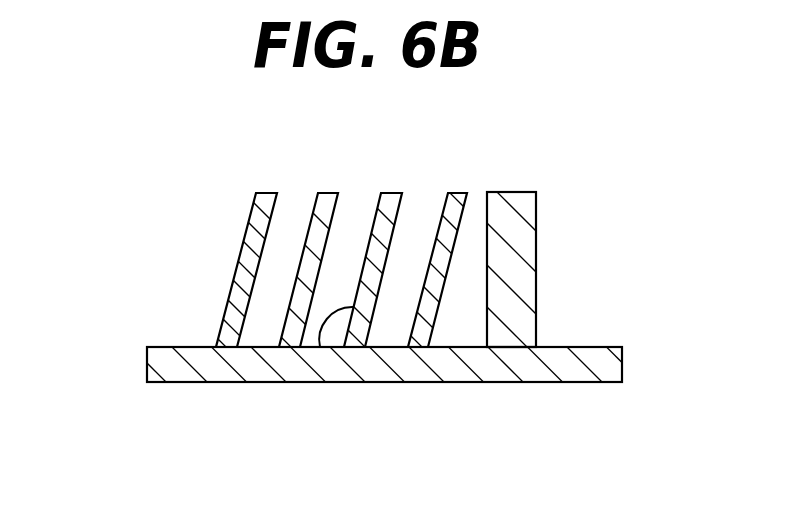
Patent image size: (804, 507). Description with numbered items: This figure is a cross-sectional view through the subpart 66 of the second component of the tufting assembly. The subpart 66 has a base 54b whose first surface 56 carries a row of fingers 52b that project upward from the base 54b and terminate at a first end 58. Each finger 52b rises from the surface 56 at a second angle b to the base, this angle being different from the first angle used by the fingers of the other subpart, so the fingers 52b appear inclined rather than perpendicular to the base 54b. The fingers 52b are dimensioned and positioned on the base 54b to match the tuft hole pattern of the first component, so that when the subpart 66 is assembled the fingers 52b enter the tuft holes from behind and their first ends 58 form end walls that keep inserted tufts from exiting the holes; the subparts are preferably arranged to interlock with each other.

The first end 58 is at (267, 192).
The fingers 52b is at (517, 192).
The base 54b is at (170, 370).
The subpart 66 is at (155, 347).
The first surface 56 is at (588, 346).
The second angle b is at (332, 313).